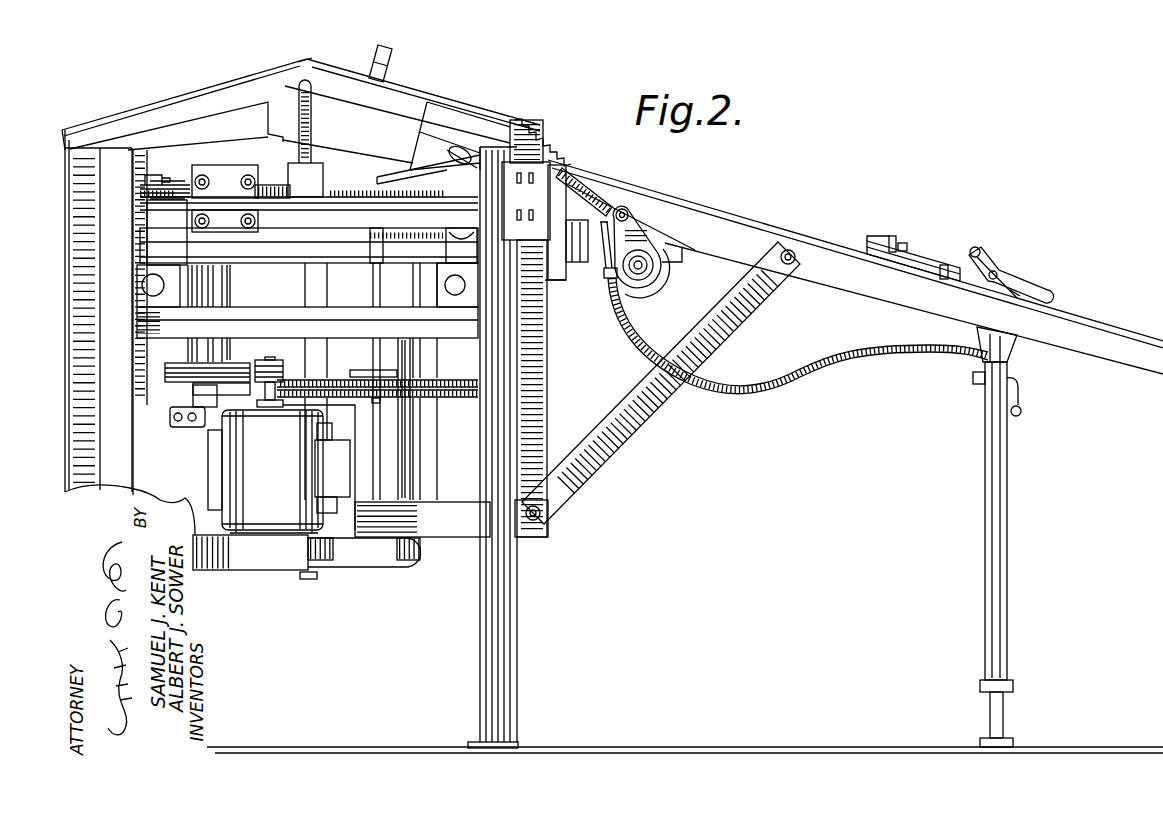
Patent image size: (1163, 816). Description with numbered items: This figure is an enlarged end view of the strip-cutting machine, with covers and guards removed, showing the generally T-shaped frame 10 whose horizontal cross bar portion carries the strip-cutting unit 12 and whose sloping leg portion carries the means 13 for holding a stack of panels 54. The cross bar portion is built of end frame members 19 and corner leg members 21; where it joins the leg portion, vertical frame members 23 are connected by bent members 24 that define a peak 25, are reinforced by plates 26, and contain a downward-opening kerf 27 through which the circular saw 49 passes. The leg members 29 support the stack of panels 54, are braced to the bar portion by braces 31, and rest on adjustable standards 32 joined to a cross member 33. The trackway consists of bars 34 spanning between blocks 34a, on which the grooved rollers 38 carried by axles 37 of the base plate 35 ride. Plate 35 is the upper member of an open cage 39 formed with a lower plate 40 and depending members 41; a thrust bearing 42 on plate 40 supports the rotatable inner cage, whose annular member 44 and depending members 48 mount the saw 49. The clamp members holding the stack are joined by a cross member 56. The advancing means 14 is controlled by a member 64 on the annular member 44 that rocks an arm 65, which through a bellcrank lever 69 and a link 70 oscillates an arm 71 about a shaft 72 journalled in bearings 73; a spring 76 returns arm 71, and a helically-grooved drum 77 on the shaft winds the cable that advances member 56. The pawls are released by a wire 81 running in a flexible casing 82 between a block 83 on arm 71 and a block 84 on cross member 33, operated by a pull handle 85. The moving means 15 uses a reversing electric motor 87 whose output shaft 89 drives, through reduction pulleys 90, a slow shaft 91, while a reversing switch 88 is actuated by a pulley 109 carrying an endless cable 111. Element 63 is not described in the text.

The frame 10 is at (524, 596).
The strip-cutting unit 12 is at (288, 580).
The panel holding means 13 is at (960, 245).
The panel advancing means 14 is at (608, 298).
The unit moving means 15 is at (200, 449).
The left end frame members 19 is at (340, 206).
The corner leg members 21 is at (125, 412).
The vertical frame members 23 is at (92, 366).
The connecting members 24 is at (205, 93).
The peak 25 is at (307, 60).
The reinforcing plates 26 is at (232, 140).
The kerf 27 is at (297, 106).
The frame members 29 is at (1143, 341).
The braces 31 is at (625, 428).
The adjustable standards 32 is at (996, 525).
The cross member 33 is at (982, 336).
The bars 34 is at (142, 284).
The blocks 34a is at (443, 306).
The base plate 35 is at (430, 236).
The axles 37 is at (403, 256).
The grooved rollers 38 is at (466, 230).
The open cage 39 is at (404, 580).
The lower plate 40 is at (418, 567).
The depending members 41 is at (410, 467).
The thrust bearing 42 is at (342, 558).
The annular member 44 is at (400, 190).
The depending members 48 is at (333, 372).
The circular saw 49 is at (312, 160).
The stack of panels 54 is at (748, 216).
The cross member 56 is at (986, 263).
The bolt 63 is at (389, 63).
The control member 64 is at (330, 172).
The arm 65 is at (414, 180).
The bellcrank lever 69 is at (450, 148).
The link 70 is at (590, 190).
The arm 71 is at (645, 240).
The shaft 72 is at (640, 290).
The bearings 73 is at (690, 258).
The spring 76 is at (548, 162).
The helically-grooved drum 77 is at (662, 286).
The wire 81 is at (1019, 380).
The flexible casing 82 is at (812, 379).
The block 83 is at (604, 275).
The block 84 is at (981, 386).
The pull handle 85 is at (1020, 415).
The electric motor 87 is at (222, 478).
The reversing switch 88 is at (150, 238).
The output shaft 89 is at (276, 366).
The reduction pulleys 90 is at (358, 414).
The slow shaft 91 is at (232, 281).
The pulley 109 is at (178, 178).
The endless cable 111 is at (145, 187).